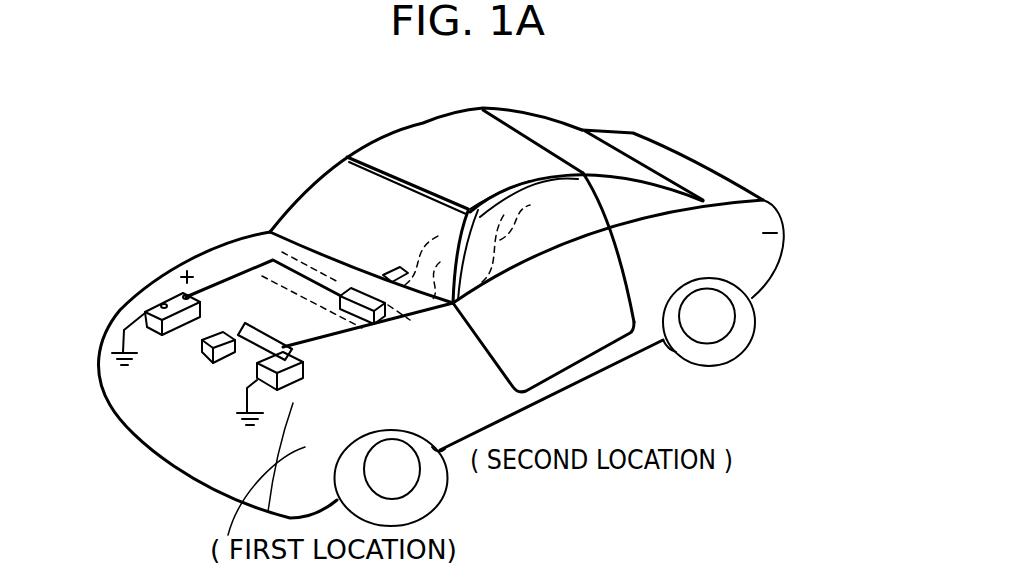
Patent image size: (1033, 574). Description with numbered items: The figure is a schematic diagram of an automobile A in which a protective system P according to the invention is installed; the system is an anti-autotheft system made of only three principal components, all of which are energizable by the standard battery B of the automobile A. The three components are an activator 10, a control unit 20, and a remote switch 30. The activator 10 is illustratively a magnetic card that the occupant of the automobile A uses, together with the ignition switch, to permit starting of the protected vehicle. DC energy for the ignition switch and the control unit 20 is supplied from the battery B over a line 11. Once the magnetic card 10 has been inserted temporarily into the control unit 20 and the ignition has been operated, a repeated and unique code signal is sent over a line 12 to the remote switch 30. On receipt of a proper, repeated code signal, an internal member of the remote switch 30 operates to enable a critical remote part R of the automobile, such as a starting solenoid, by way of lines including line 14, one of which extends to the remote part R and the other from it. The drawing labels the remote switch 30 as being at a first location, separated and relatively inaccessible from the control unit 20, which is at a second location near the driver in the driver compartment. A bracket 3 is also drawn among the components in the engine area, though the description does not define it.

The automobile A is at (631, 91).
The battery B is at (157, 306).
The protective system P is at (247, 285).
The remote part R is at (208, 364).
The connecting bus bar 3 is at (277, 337).
The activator 10 is at (400, 267).
The line 11 is at (220, 282).
The line 12 is at (325, 340).
The line 14 is at (247, 365).
The control unit 20 is at (467, 445).
The remote switch 30 is at (290, 385).